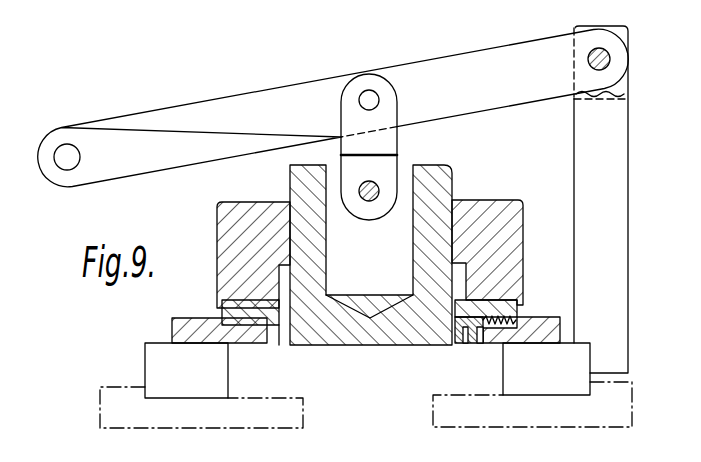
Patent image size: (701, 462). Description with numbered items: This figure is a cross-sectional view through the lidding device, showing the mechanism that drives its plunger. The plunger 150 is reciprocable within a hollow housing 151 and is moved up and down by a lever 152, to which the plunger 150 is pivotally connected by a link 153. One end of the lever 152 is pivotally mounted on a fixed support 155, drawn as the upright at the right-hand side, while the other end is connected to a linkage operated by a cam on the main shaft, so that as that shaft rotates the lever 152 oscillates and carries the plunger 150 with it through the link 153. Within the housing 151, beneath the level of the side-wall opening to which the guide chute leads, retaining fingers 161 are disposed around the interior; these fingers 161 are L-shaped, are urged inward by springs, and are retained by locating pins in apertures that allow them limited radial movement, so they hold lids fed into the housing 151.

The plunger 150 is at (437, 192).
The hollow housing 151 is at (227, 238).
The lever 152 is at (177, 107).
The link 153 is at (355, 90).
The fixed support 155 is at (586, 171).
The retaining fingers 161 is at (465, 346).